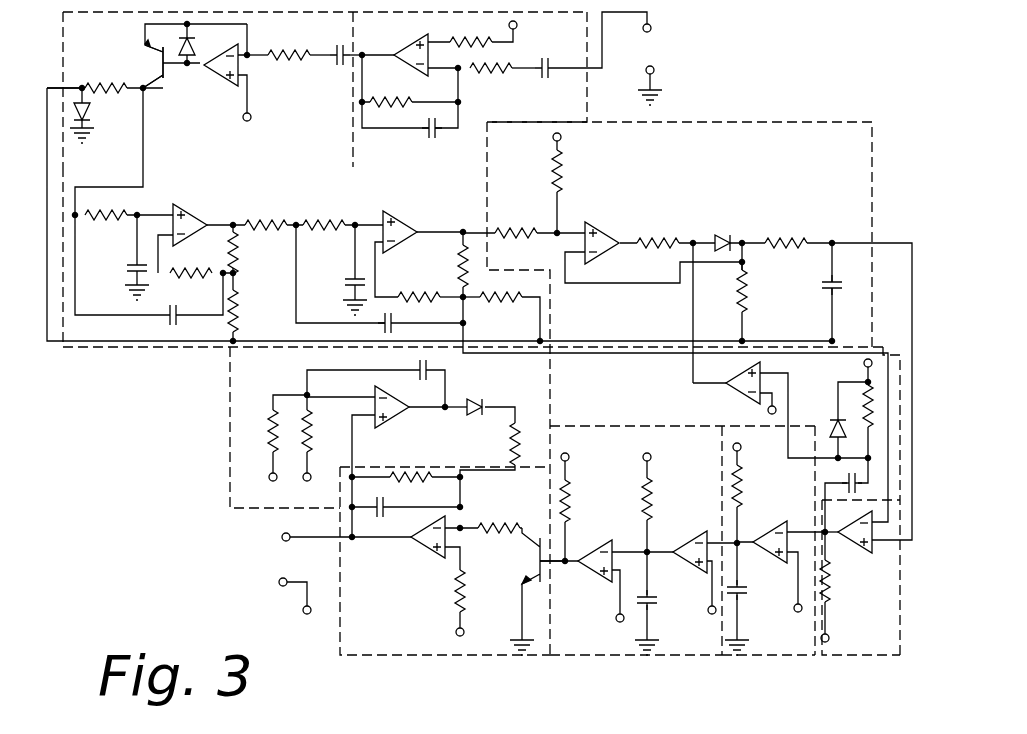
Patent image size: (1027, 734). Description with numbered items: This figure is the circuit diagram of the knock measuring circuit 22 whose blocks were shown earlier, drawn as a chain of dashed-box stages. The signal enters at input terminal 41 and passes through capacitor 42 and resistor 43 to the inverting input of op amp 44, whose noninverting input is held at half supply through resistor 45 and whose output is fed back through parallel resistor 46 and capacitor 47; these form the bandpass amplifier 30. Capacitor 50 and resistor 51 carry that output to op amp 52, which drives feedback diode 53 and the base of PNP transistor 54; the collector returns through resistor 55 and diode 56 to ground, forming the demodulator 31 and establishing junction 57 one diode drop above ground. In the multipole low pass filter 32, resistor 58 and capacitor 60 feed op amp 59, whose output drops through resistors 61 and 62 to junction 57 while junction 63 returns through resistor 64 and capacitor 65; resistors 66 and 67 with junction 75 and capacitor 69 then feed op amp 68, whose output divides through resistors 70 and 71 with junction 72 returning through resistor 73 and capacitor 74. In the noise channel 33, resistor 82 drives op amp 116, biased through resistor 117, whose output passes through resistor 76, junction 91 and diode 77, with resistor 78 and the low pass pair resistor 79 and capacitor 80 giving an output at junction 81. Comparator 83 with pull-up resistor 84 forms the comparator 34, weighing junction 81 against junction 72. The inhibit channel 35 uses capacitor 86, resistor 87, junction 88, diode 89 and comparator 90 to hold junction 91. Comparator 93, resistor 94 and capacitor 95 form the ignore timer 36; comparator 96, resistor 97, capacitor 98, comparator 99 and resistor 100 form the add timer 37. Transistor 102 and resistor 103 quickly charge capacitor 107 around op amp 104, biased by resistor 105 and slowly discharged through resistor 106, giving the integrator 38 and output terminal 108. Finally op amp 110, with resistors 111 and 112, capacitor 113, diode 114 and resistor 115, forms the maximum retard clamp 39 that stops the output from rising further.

The circuit 22 is at (731, 63).
The bandpass amplifier 30 is at (594, 77).
The demodulator 31 is at (62, 22).
The multipole low pass filter 32 is at (157, 354).
The noise channel 33 is at (731, 115).
The comparator 34 is at (851, 660).
The reference stage 35 is at (896, 345).
The ignore timer 36 is at (745, 664).
The add timer 37 is at (622, 665).
The integrator 38 is at (428, 664).
The maximum retard clamp 39 is at (229, 407).
The input terminal 41 is at (652, 28).
The capacitor 42 is at (550, 72).
The resistor 43 is at (510, 70).
The operational amplifier 44 is at (410, 62).
The resistor 45 is at (467, 39).
The resistor 46 is at (410, 105).
The capacitor 47 is at (435, 120).
The capacitor 50 is at (338, 67).
The resistor 51 is at (308, 62).
The op amp 52 is at (222, 80).
The diode 53 is at (185, 42).
The PNP bipolar transistor 54 is at (165, 78).
The resistor 55 is at (122, 86).
The diode 56 is at (85, 113).
The junction 57 is at (82, 88).
The resistor 58 is at (120, 216).
The op amp 59 is at (193, 217).
The capacitor 60 is at (130, 266).
The resistor 61 is at (240, 240).
The resistor 62 is at (242, 300).
The junction 63 is at (235, 273).
The resistor 64 is at (185, 273).
The capacitor 65 is at (172, 309).
The resistor 66 is at (278, 220).
The resistor 67 is at (328, 222).
The op amp 68 is at (398, 232).
The capacitor 69 is at (348, 284).
The resistor 70 is at (463, 232).
The resistor 71 is at (517, 300).
The junction 72 is at (460, 295).
The resistor 73 is at (415, 296).
The capacitor 74 is at (380, 335).
The junction 75 is at (296, 225).
The resistor 76 is at (655, 242).
The diode 77 is at (722, 242).
The resistor 78 is at (744, 287).
The resistor 79 is at (777, 242).
The capacitor 80 is at (835, 287).
The junction 81 is at (832, 242).
The resistor 82 is at (500, 233).
The comparator 83 is at (860, 545).
The resistor 84 is at (832, 595).
The capacitor 86 is at (845, 476).
The resistor 87 is at (865, 412).
The junction 88 is at (868, 458).
The diode 89 is at (831, 426).
The comparator 90 is at (738, 380).
The junction 91 is at (693, 243).
The comparator 93 is at (766, 540).
The resistor 94 is at (737, 495).
The capacitor 95 is at (748, 597).
The comparator 96 is at (680, 547).
The resistor 97 is at (647, 504).
The capacitor 98 is at (654, 598).
The comparator 99 is at (592, 570).
The resistor 100 is at (570, 503).
The bipolar NPN transistor 102 is at (537, 565).
The resistor 103 is at (494, 525).
The op amp 104 is at (425, 545).
The resistor 105 is at (455, 589).
The resistor 106 is at (400, 478).
The capacitor 107 is at (383, 508).
The output terminal 108 is at (282, 537).
The op amp 110 is at (393, 410).
The resistor 111 is at (268, 422).
The resistor 112 is at (310, 437).
The capacitor 113 is at (432, 360).
The diode 114 is at (475, 405).
The resistor 115 is at (515, 445).
The op amp 116 is at (605, 240).
The resistor 117 is at (565, 193).